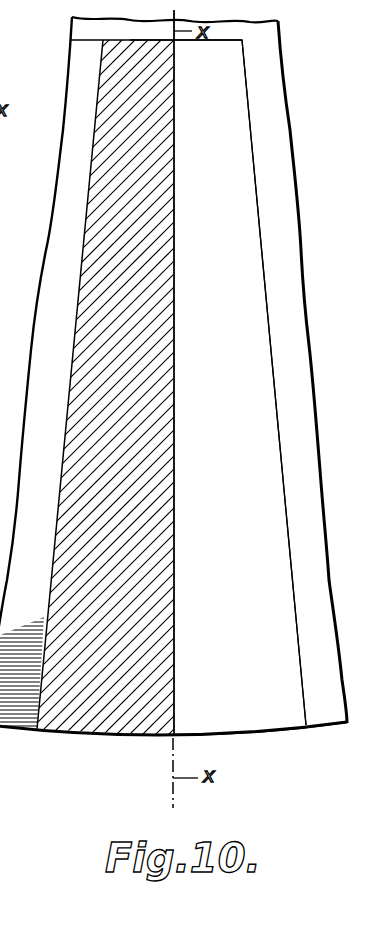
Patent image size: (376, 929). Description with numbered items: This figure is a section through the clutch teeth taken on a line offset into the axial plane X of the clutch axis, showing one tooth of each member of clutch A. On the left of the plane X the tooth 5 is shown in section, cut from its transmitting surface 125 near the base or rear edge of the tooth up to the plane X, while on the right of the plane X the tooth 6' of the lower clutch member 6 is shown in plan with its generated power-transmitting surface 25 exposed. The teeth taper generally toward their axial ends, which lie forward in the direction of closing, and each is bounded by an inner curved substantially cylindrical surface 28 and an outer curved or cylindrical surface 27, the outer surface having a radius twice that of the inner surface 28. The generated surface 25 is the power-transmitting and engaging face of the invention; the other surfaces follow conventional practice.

The hatched wall section 5 is at (70, 318).
The lower clutch member 6 is at (173, 376).
The tooth 6' is at (188, 382).
The generated power-transmitting surface 25 is at (238, 247).
The outer curved or cylindrical surface 27 is at (250, 733).
The inner curved substantially cylindrical surface 28 is at (216, 43).
The transmitting surface 125 is at (68, 408).